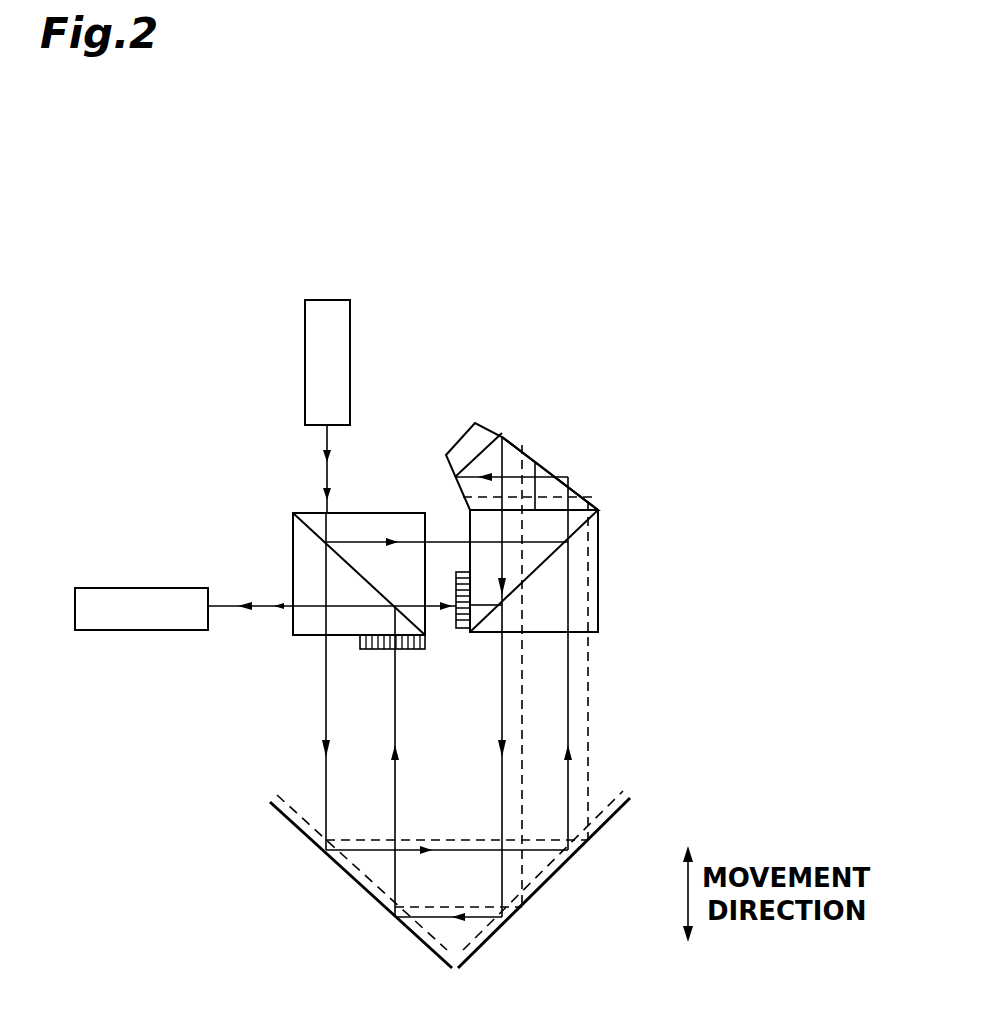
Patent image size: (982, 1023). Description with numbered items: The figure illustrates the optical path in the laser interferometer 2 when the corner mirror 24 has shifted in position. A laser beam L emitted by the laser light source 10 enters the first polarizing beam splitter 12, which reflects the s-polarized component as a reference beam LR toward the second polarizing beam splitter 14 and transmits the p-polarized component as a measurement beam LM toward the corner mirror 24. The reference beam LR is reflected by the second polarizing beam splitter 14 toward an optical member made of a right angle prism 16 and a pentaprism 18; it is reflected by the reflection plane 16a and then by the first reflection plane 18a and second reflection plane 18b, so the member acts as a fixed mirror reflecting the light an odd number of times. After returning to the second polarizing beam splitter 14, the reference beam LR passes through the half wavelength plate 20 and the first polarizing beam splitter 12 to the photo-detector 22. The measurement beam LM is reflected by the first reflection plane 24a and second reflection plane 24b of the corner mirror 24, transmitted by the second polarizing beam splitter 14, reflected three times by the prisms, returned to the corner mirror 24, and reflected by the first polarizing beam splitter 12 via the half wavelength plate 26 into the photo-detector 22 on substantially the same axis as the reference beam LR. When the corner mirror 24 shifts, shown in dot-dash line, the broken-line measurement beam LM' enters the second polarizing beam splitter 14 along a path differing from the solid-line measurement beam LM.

The laser interferometer 2 is at (195, 372).
The laser light source 10 is at (335, 300).
The first polarizing beam splitter 12 is at (372, 520).
The second polarizing beam splitter 14 is at (598, 553).
The right angle prism 16 is at (547, 468).
The reflection plane 16a is at (590, 503).
The pentaprism 18 is at (465, 430).
The first reflection plane 18a is at (446, 455).
The second reflection plane 18b is at (502, 437).
The half wavelength plate 20 is at (447, 645).
The photo-detector 22 is at (143, 613).
The corner mirror 24 is at (488, 870).
The first reflection plane 24a is at (290, 797).
The second reflection plane 24b is at (625, 797).
The half wavelength plate 26 is at (367, 650).
The laser beam L is at (329, 443).
The reference beam LR is at (450, 540).
The measurement beam LM is at (465, 679).
The measurement beam LM' is at (518, 676).